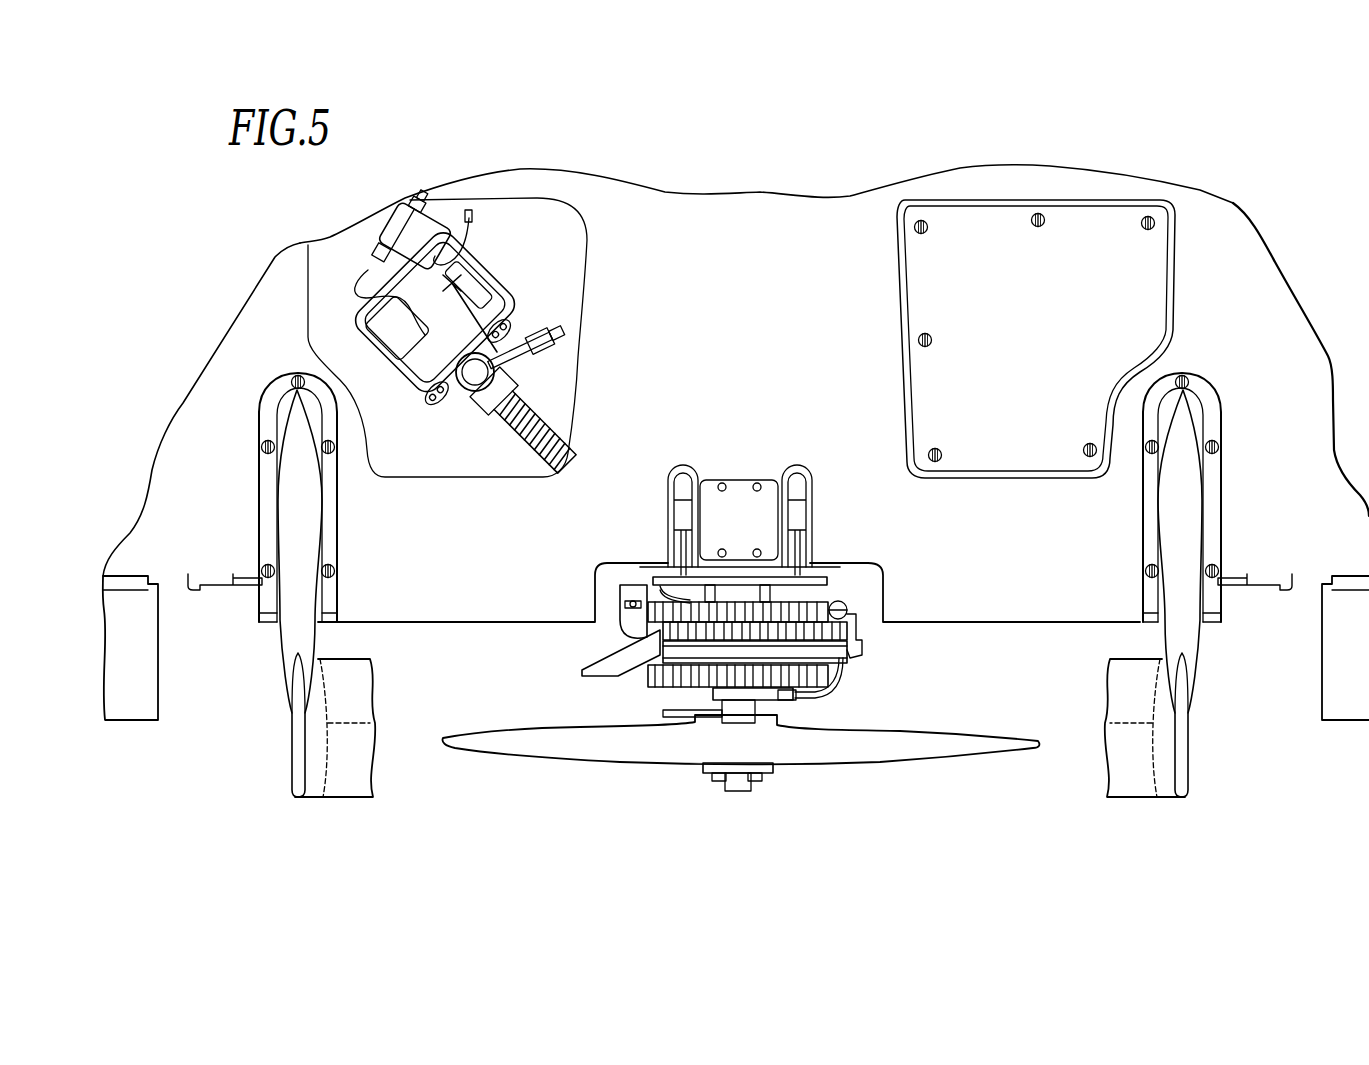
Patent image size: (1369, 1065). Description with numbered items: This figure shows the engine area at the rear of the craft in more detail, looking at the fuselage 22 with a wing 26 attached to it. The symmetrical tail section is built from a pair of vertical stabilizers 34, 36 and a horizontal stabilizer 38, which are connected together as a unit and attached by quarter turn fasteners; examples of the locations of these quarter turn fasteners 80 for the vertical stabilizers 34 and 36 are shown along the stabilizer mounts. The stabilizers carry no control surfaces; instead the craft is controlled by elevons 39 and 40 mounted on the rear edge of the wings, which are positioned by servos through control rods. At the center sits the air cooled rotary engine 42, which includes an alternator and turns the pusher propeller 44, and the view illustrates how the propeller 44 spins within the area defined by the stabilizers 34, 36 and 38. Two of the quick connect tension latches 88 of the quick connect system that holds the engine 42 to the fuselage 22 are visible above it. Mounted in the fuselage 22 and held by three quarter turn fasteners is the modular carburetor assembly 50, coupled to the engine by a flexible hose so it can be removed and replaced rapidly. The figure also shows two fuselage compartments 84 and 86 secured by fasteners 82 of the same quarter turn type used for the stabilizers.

The fuselage 22 is at (765, 193).
The wing 26 is at (210, 362).
The vertical stabilizer 34 is at (298, 630).
The vertical stabilizer 36 is at (1204, 593).
The horizontal stabilizer 38 is at (350, 800).
The elevon 39 is at (130, 712).
The elevon 40 is at (1350, 716).
The rotary engine 42 is at (828, 655).
The pusher propeller 44 is at (657, 765).
The carburetor assembly 50 is at (420, 418).
The quarter turn fasteners 80 is at (262, 568).
The fasteners 82 is at (1032, 221).
The fuselage compartment 84 is at (580, 283).
The fuselage compartment 86 is at (1040, 338).
The quick connect tension latches 88 is at (668, 507).